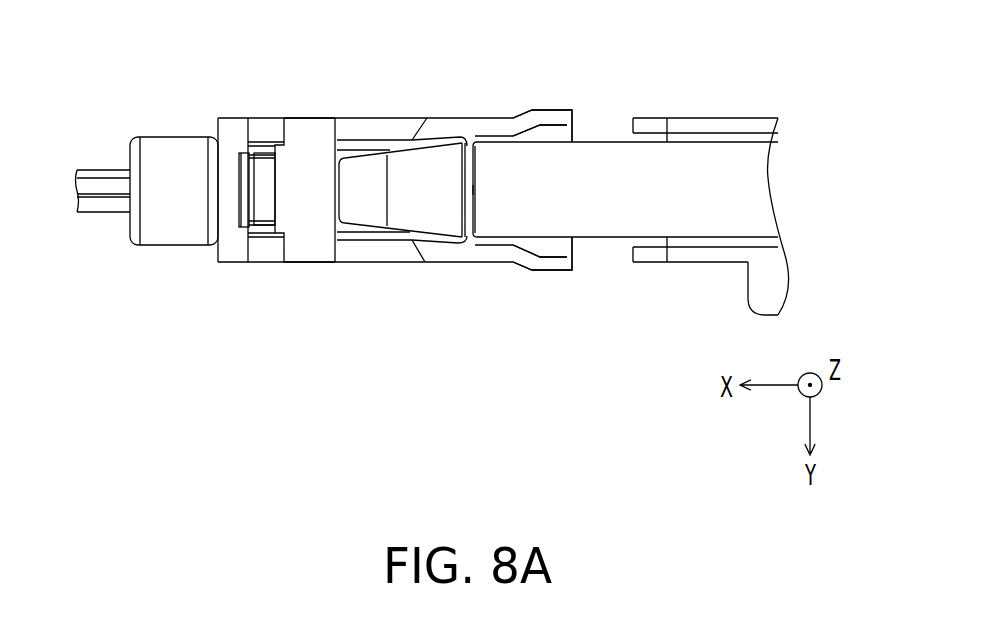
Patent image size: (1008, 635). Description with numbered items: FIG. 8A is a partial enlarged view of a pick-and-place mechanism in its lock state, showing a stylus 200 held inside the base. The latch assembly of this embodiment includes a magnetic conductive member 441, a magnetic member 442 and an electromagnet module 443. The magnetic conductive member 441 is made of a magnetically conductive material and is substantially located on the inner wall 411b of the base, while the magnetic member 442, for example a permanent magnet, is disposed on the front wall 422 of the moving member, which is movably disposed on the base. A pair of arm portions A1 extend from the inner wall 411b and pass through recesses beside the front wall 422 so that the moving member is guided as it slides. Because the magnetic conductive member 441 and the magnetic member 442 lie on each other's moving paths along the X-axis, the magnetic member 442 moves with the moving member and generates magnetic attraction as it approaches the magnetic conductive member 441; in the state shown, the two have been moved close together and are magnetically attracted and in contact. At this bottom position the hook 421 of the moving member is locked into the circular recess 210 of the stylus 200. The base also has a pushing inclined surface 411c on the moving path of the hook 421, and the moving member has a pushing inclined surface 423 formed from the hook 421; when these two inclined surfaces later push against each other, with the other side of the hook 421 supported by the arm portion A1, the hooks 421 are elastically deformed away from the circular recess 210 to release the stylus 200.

The stylus 200 is at (752, 192).
The circular recess 210 is at (485, 186).
The inner wall 411b is at (234, 258).
The pushing inclined surface 411c is at (627, 114).
The hook 421 is at (474, 131).
The front wall 422 is at (308, 252).
The pushing inclined surface 423 is at (574, 119).
The magnetic conductive member 441 is at (245, 182).
The magnetic member 442 is at (270, 190).
The electromagnet module 443 is at (172, 147).
The arm portions A1 is at (378, 125).